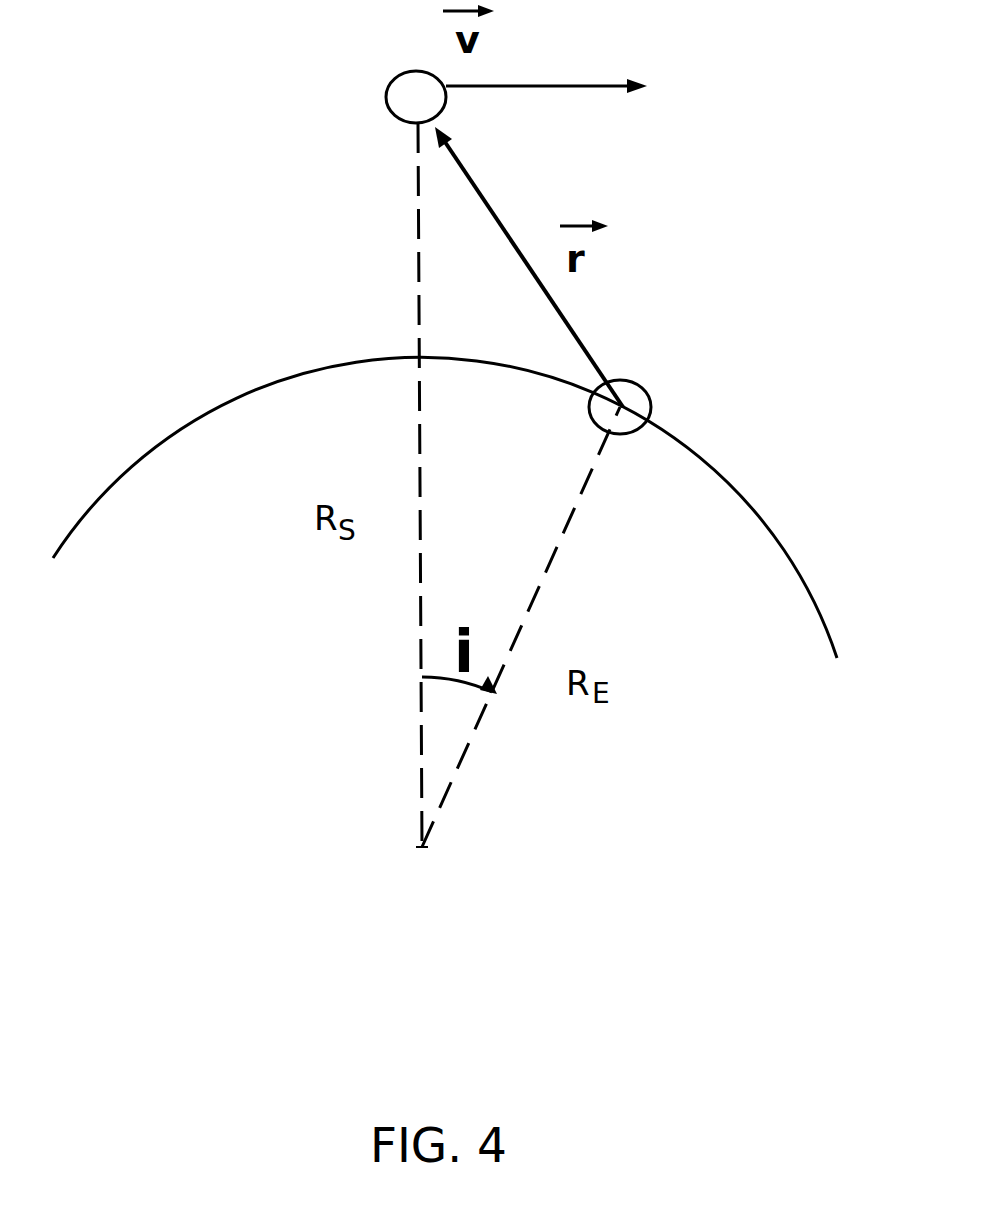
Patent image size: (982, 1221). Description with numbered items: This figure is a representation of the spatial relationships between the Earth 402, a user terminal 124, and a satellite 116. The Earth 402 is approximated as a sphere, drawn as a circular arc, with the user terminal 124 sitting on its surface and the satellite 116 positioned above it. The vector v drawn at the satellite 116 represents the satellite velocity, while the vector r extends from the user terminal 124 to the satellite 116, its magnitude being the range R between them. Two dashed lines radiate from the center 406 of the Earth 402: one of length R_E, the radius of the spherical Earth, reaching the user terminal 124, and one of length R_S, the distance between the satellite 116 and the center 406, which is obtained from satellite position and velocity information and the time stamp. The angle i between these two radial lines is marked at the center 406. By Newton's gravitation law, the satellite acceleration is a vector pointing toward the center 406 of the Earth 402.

The satellite 116 is at (398, 72).
The user terminal 124 is at (630, 380).
The Earth 402 is at (788, 540).
The center of the Earth 406 is at (422, 849).